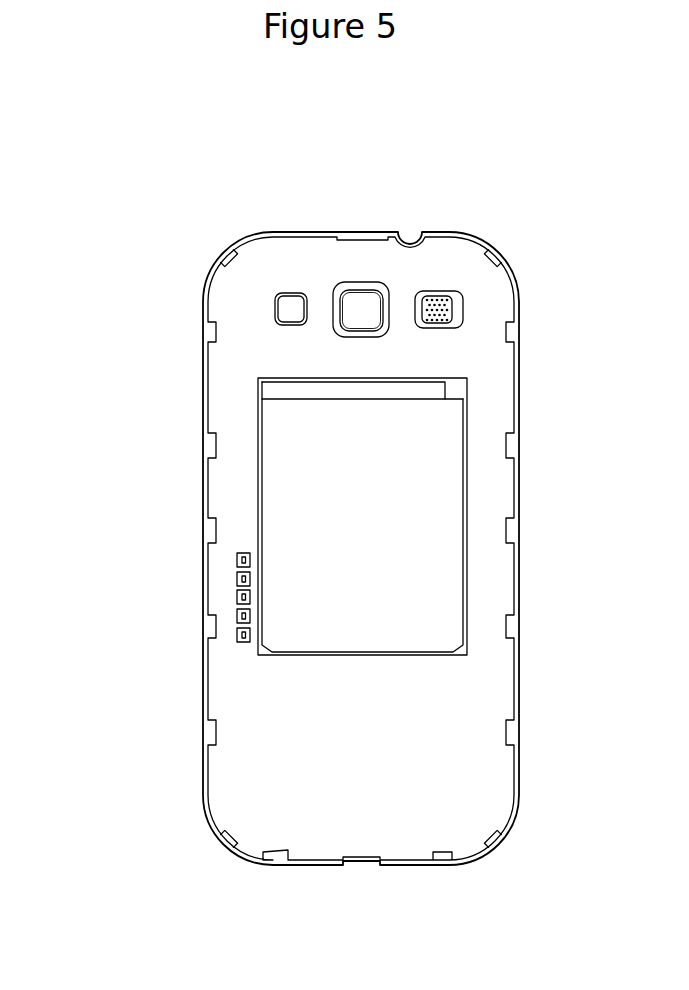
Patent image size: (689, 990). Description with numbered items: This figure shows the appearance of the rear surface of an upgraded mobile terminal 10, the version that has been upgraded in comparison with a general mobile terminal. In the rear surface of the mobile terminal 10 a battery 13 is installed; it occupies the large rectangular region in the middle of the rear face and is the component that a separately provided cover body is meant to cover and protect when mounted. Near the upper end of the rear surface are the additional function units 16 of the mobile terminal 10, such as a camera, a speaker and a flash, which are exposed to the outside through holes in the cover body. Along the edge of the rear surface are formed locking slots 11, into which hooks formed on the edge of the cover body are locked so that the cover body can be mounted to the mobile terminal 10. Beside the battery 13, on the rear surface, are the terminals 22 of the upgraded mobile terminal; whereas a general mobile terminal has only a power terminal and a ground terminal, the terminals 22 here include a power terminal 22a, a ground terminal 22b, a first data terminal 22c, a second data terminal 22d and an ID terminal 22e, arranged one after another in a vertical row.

The mobile terminal 10 is at (493, 177).
The locking slots 11 is at (507, 450).
The battery 13 is at (428, 586).
The additional function units 16 is at (290, 300).
The terminals 22 is at (82, 702).
The power terminal 22a is at (237, 560).
The ground terminal 22b is at (237, 579).
The first data terminal 22c is at (237, 598).
The second data terminal 22d is at (237, 616).
The ID terminal 22e is at (237, 636).